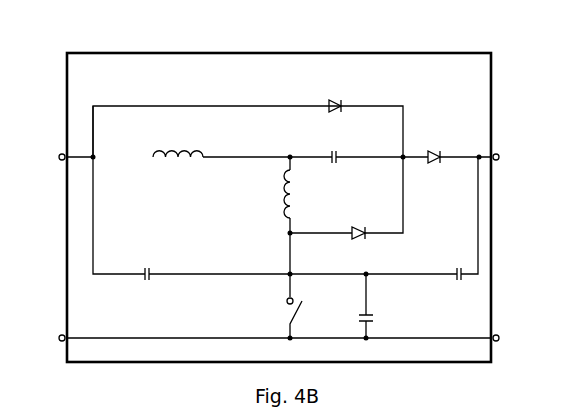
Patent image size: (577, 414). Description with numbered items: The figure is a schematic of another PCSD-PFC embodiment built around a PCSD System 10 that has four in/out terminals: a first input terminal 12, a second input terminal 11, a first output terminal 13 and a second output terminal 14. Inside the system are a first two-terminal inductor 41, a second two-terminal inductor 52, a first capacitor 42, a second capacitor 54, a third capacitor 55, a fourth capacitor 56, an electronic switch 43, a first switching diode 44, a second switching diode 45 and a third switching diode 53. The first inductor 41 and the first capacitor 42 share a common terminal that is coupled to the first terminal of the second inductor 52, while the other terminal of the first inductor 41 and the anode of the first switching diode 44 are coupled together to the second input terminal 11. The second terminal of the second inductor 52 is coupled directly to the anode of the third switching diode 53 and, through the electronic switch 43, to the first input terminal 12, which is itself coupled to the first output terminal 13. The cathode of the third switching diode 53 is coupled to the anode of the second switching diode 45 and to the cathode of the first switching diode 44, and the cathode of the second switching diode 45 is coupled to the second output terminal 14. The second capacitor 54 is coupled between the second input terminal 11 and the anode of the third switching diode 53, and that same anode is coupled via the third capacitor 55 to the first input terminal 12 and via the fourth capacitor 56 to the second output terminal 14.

The PCSD System 10 is at (77, 47).
The second input terminal Vin1 11 is at (58, 177).
The first input terminal Vin0 12 is at (46, 345).
The first output terminal Vout0 13 is at (531, 342).
The second output terminal Vout1 14 is at (514, 174).
The first two-terminal inductor L1 41 is at (207, 144).
The first capacitor C1 42 is at (347, 146).
The electronic switch SW1 43 is at (277, 316).
The first switching diode D1 44 is at (358, 95).
The second switching diode D2 45 is at (440, 139).
The second two-terminal inductor L2 52 is at (269, 200).
The third switching diode D3 53 is at (356, 223).
The second capacitor C2 54 is at (146, 291).
The third capacitor C3 55 is at (357, 316).
The fourth capacitor C4 56 is at (456, 290).